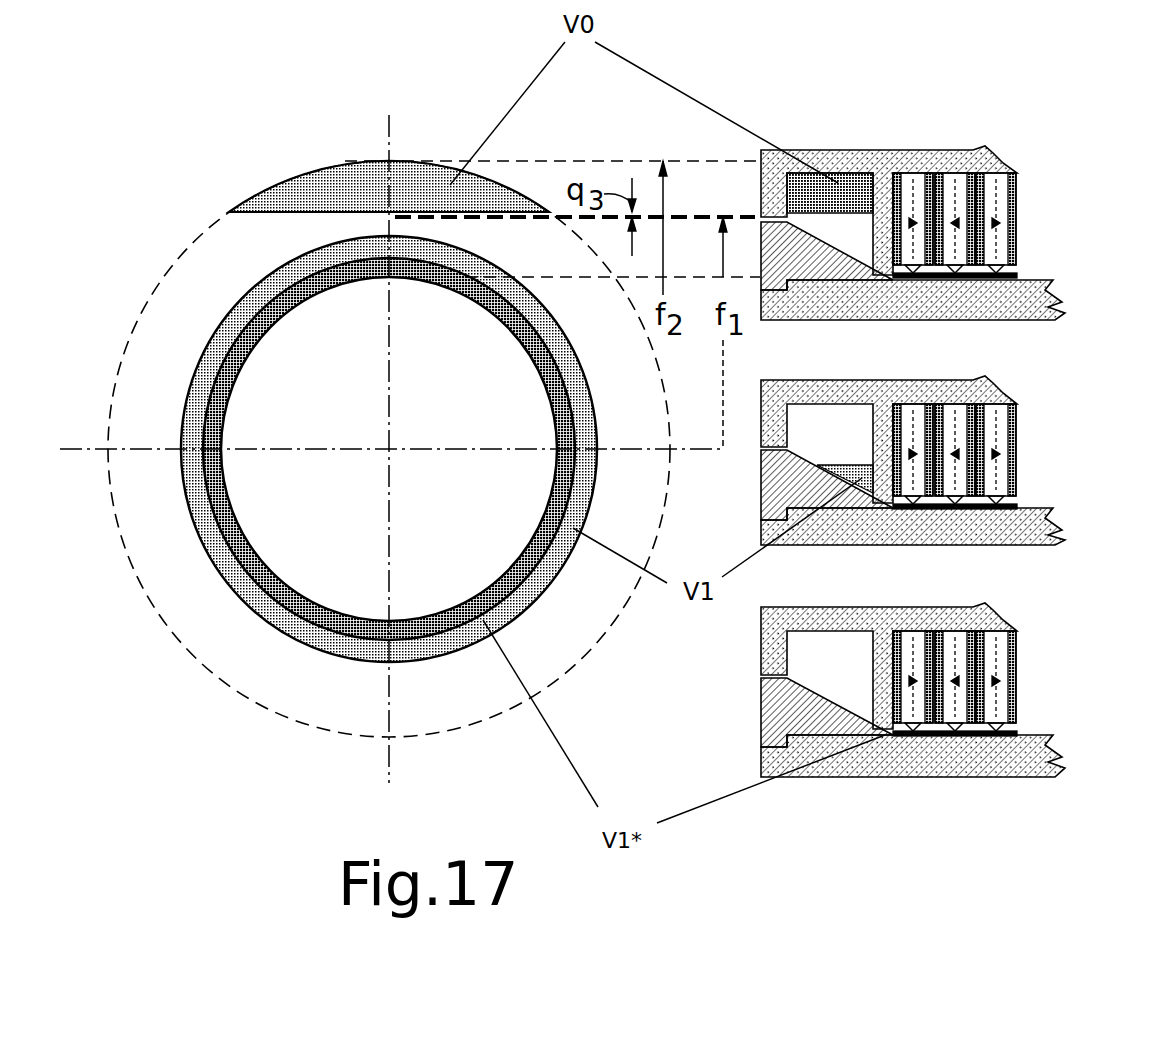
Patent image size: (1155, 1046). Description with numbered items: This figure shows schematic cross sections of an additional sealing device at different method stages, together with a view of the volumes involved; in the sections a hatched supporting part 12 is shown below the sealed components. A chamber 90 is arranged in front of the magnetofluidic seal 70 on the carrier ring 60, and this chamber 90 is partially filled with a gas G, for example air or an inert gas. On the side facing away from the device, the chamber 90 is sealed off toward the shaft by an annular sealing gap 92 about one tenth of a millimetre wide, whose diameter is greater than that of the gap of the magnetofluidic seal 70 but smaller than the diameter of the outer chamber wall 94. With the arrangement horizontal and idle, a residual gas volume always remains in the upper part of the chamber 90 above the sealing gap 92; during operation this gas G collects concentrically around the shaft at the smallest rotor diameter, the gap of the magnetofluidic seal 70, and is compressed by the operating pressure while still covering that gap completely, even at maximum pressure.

The substrate / base plate 12 is at (1052, 277).
The carrier ring 60 is at (1010, 414).
The magnetofluidic seal 70 is at (997, 203).
The chamber 90 is at (850, 233).
The sealing gap 92 is at (753, 217).
The outer chamber wall 94 is at (812, 150).
The gas G is at (850, 180).